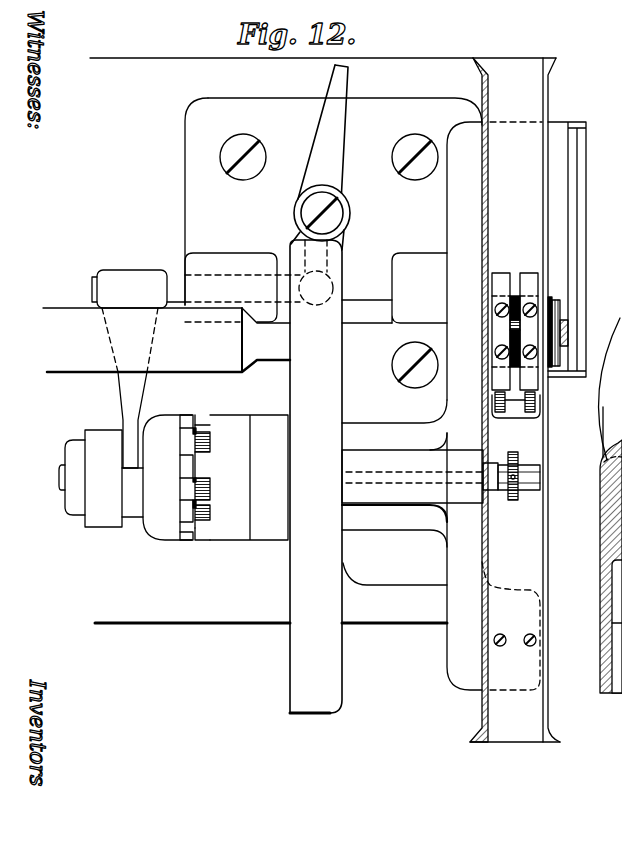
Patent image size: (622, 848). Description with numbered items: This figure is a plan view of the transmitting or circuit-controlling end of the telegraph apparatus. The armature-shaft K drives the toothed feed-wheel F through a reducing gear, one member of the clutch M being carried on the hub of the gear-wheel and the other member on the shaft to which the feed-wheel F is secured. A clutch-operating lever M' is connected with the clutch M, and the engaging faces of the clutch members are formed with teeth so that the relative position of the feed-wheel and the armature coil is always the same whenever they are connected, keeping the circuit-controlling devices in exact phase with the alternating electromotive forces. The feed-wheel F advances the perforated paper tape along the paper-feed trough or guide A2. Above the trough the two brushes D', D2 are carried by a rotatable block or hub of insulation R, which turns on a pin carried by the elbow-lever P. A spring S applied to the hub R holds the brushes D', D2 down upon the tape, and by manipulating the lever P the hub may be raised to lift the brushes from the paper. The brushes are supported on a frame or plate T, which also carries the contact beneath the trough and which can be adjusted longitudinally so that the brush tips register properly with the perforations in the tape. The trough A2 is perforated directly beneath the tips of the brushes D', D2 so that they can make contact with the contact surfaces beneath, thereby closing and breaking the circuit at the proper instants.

The paper-feed trough A2 is at (512, 562).
The brush D' is at (515, 328).
The brush D2 is at (523, 273).
The rotatable block or hub of insulation R is at (549, 292).
The spring S is at (557, 317).
The elbow-lever P is at (566, 336).
The frame or plate T is at (584, 192).
The feed-wheel F is at (535, 478).
The armature-shaft K is at (201, 367).
The clutch M is at (173, 491).
The clutch-operating lever M' is at (129, 369).